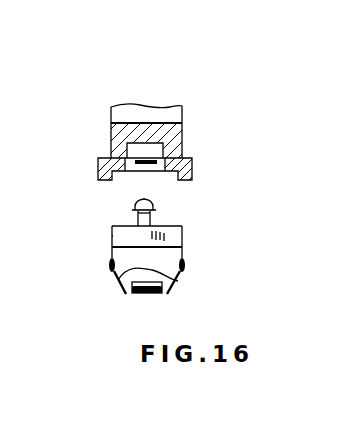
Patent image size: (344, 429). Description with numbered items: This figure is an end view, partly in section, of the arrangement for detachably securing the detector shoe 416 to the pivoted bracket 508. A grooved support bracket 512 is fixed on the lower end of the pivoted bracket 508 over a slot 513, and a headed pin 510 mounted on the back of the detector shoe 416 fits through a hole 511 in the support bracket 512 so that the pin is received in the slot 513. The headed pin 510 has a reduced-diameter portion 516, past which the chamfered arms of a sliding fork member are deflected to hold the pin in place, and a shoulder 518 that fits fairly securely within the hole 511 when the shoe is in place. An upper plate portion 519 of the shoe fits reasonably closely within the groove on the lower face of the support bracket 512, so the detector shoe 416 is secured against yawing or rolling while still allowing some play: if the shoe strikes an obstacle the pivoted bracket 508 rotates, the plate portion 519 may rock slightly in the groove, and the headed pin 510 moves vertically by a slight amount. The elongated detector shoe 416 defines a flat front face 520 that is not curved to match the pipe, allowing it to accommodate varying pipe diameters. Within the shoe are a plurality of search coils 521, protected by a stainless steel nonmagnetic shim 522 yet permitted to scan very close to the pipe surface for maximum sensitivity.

The pivoted bracket 508 is at (121, 118).
The slot 513 is at (163, 150).
The grooved support bracket 512 is at (100, 172).
The hole 511 is at (140, 170).
The headed pin 510 is at (153, 201).
The shoulder 518 is at (176, 226).
The reduced-diameter portion 516 is at (112, 226).
The upper plate portion 519 is at (112, 236).
The detector shoe 416 is at (162, 258).
The nonmagnetic shim 522 is at (111, 270).
The search coils 521 is at (166, 290).
The flat front face 520 is at (128, 294).